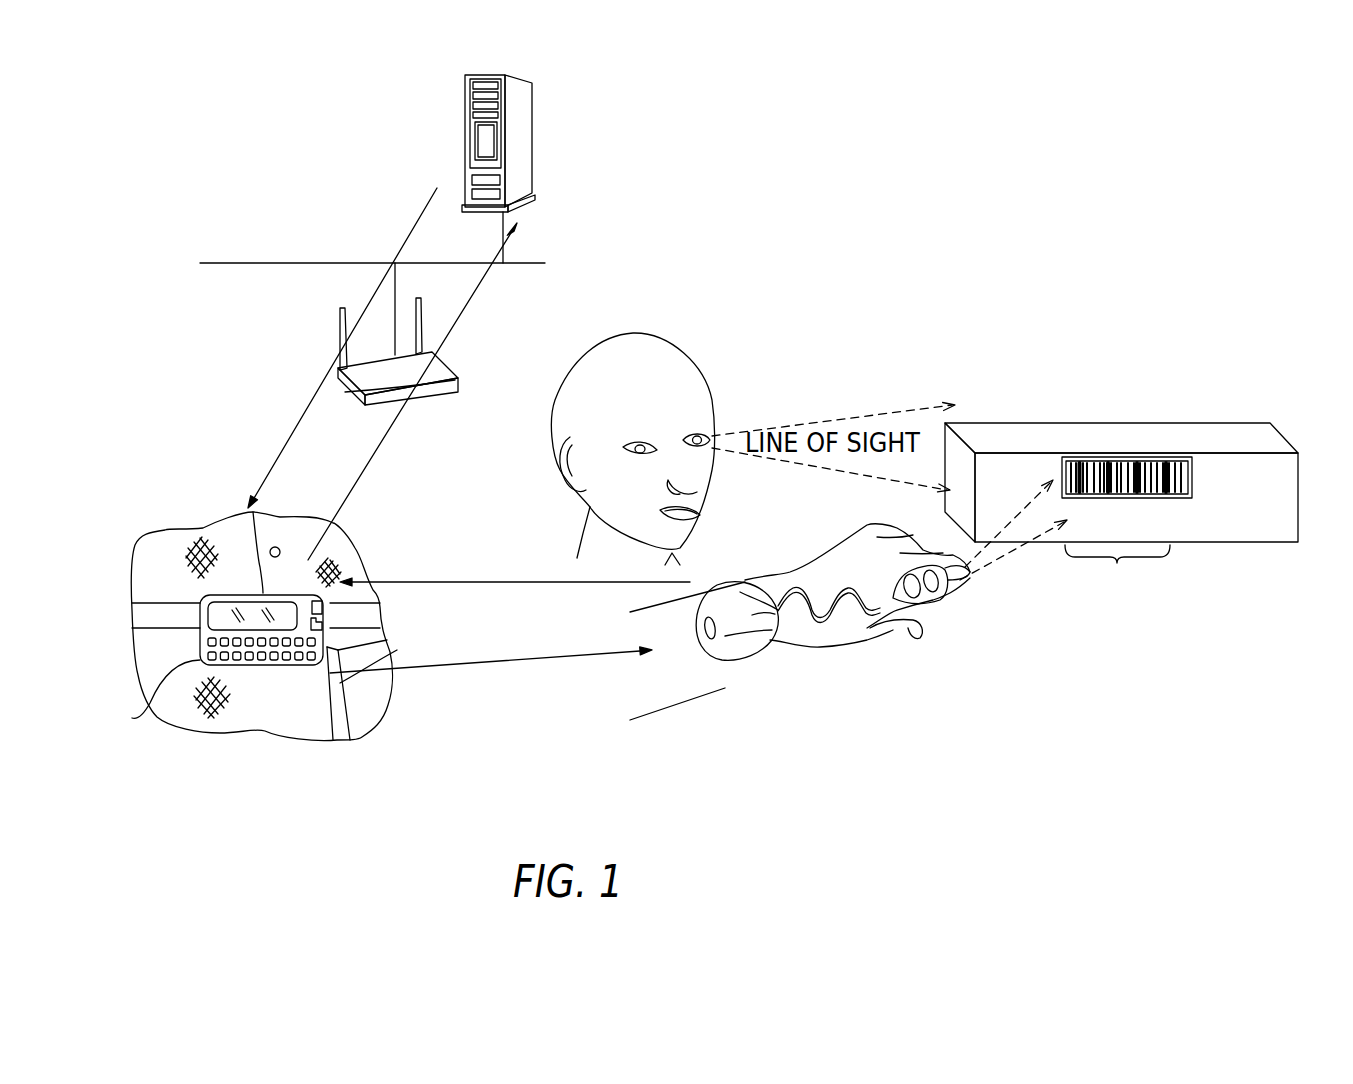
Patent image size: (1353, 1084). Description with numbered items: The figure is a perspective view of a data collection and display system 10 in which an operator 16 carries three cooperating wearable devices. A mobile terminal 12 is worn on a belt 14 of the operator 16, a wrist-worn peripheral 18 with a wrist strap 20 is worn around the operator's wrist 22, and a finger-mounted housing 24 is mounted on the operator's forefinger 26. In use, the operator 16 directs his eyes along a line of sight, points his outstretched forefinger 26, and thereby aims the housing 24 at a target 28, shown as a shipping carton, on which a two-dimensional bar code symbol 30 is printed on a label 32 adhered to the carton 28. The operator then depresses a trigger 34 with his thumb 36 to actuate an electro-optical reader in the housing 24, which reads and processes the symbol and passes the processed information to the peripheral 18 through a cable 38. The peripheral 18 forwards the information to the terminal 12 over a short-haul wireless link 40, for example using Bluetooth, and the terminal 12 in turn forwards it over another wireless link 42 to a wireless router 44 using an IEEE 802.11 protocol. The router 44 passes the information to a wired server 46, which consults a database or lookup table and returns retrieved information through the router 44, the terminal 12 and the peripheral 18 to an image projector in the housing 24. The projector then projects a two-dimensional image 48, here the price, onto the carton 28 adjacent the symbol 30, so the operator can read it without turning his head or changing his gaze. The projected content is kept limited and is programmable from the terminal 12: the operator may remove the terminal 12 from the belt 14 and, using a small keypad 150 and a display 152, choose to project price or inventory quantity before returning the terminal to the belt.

The data collection and display system 10 is at (594, 766).
The mobile terminal 12 is at (152, 702).
The belt 14 is at (357, 618).
The operator 16 is at (702, 385).
The wrist-worn peripheral 18 is at (730, 650).
The wrist strap 20 is at (760, 655).
The wrist 22 is at (790, 645).
The finger-mounted housing 24 is at (935, 600).
The forefinger 26 is at (958, 575).
The target 28 is at (1265, 432).
The two-dimensional bar code symbol 30 is at (1140, 462).
The label 32 is at (1192, 492).
The trigger 34 is at (942, 590).
The thumb 36 is at (905, 632).
The cable 38 is at (797, 580).
The wireless link 40 is at (463, 582).
The wireless link 42 is at (381, 446).
The wireless router 44 is at (458, 372).
The wired server 46 is at (532, 137).
The two-dimensional image 48 is at (1117, 556).
The keypad 150 is at (247, 660).
The display 152 is at (222, 612).